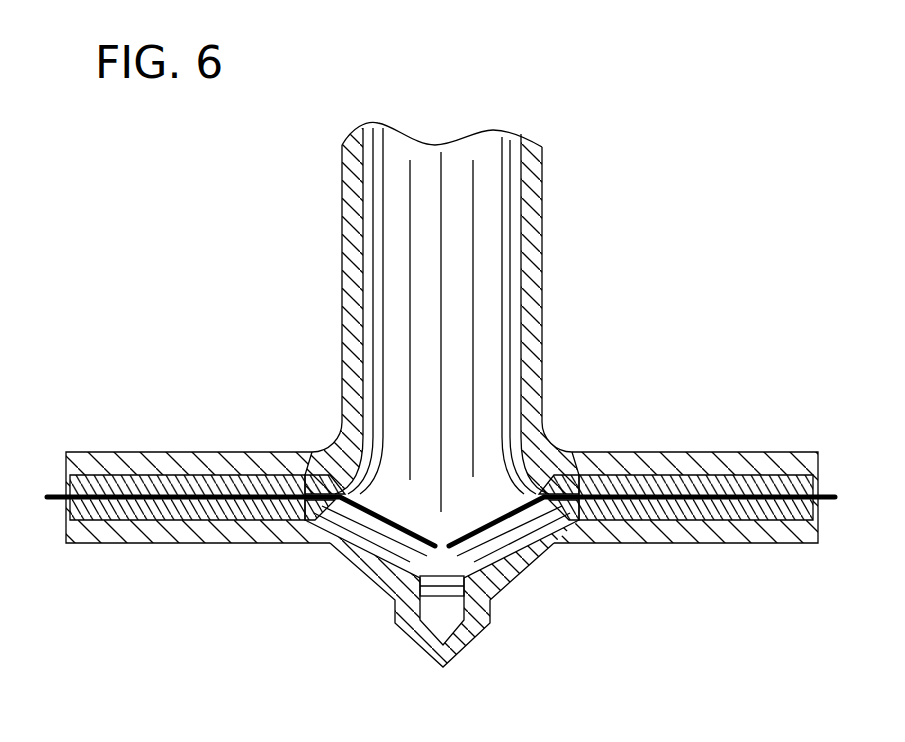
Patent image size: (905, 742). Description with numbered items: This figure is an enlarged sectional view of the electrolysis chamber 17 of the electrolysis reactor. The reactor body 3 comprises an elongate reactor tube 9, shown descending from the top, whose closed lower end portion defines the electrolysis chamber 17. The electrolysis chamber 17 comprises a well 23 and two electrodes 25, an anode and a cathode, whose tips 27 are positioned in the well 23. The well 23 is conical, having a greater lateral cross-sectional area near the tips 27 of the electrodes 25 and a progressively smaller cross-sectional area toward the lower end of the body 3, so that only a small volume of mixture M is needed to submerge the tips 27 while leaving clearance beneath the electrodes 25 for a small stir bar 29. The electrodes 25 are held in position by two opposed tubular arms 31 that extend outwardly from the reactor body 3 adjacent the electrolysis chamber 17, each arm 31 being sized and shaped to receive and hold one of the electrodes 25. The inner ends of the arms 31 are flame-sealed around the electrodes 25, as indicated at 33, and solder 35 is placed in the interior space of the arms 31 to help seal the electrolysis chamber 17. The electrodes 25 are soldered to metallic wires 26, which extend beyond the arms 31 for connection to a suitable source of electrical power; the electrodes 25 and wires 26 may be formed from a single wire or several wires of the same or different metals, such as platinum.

The reactor body 3 is at (622, 197).
The reactor tube 9 is at (543, 268).
The electrolysis chamber 17 is at (446, 352).
The well 23 is at (393, 600).
The electrodes 25 is at (363, 523).
The metallic wires 26 is at (47, 500).
The tips 27 is at (385, 555).
The stir bar 29 is at (443, 590).
The tubular arms 31 is at (165, 533).
The flame seal 33 is at (322, 518).
The solder 35 is at (150, 484).
The mixture M is at (448, 562).